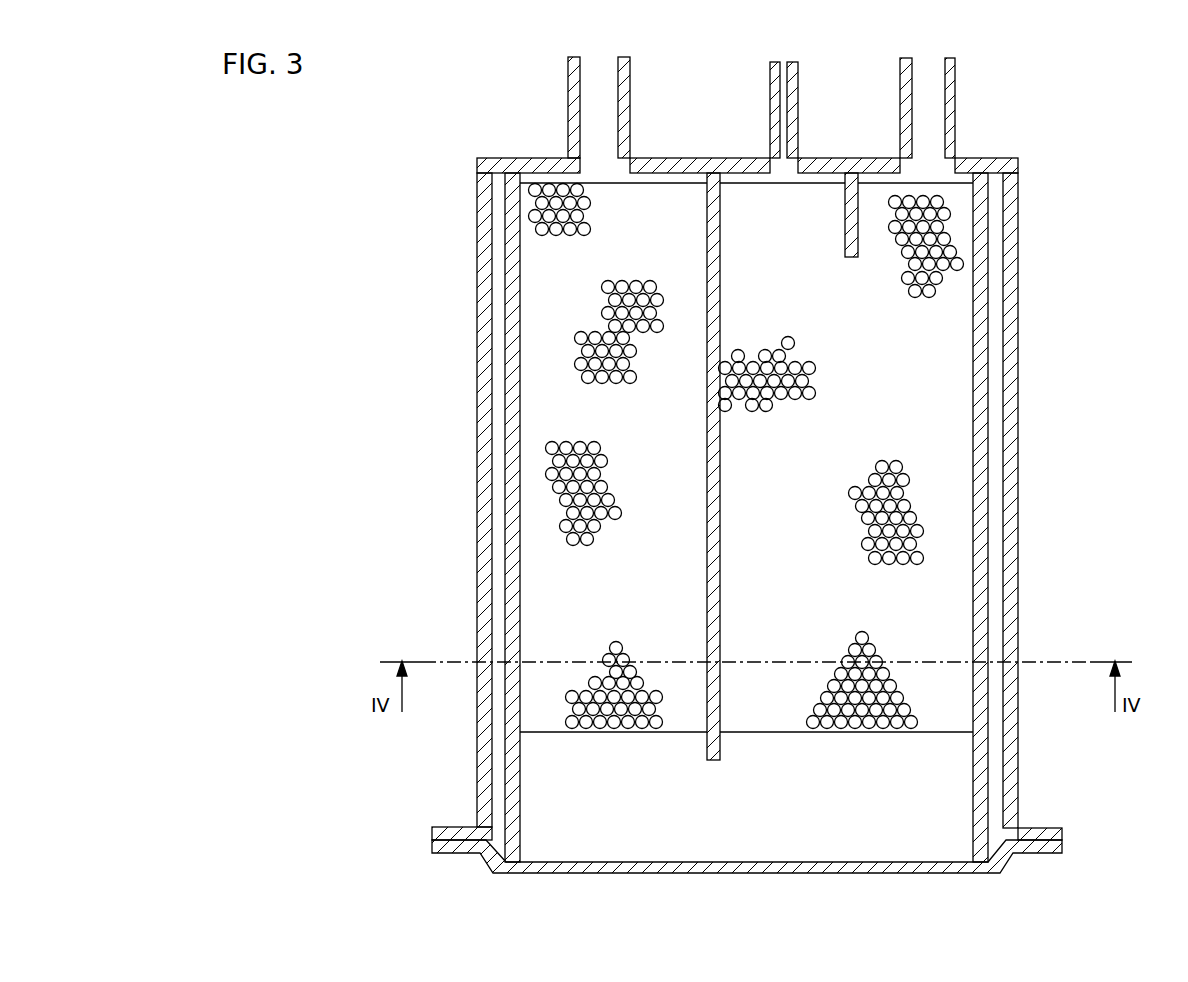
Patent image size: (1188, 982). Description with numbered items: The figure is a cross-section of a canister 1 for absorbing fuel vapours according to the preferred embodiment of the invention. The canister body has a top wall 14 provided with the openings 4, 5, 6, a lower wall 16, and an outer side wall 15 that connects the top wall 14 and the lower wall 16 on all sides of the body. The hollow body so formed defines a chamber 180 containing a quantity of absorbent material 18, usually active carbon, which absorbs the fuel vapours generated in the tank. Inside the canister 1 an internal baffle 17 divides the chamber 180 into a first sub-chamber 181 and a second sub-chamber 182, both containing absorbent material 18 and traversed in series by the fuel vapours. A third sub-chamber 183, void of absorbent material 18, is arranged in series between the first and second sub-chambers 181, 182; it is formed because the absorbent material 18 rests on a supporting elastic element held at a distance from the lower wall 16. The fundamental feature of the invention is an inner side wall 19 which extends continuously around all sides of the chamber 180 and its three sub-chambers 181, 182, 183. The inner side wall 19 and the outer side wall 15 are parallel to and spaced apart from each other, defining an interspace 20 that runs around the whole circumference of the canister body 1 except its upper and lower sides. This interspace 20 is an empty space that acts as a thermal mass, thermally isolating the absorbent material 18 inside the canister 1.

The canister 1 is at (1044, 508).
The opening 4 is at (618, 84).
The opening 5 is at (912, 98).
The opening 6 is at (788, 78).
The top wall 14 is at (682, 158).
The outer side wall 15 is at (478, 387).
The lower wall 16 is at (940, 867).
The internal baffle 17 is at (713, 762).
The absorbent material 18 is at (950, 358).
The inner side wall 19 is at (512, 287).
The interspace 20 is at (496, 850).
The chamber 180 is at (970, 578).
The first sub-chamber 181 is at (953, 298).
The second sub-chamber 182 is at (525, 570).
The third sub-chamber 183 is at (535, 848).